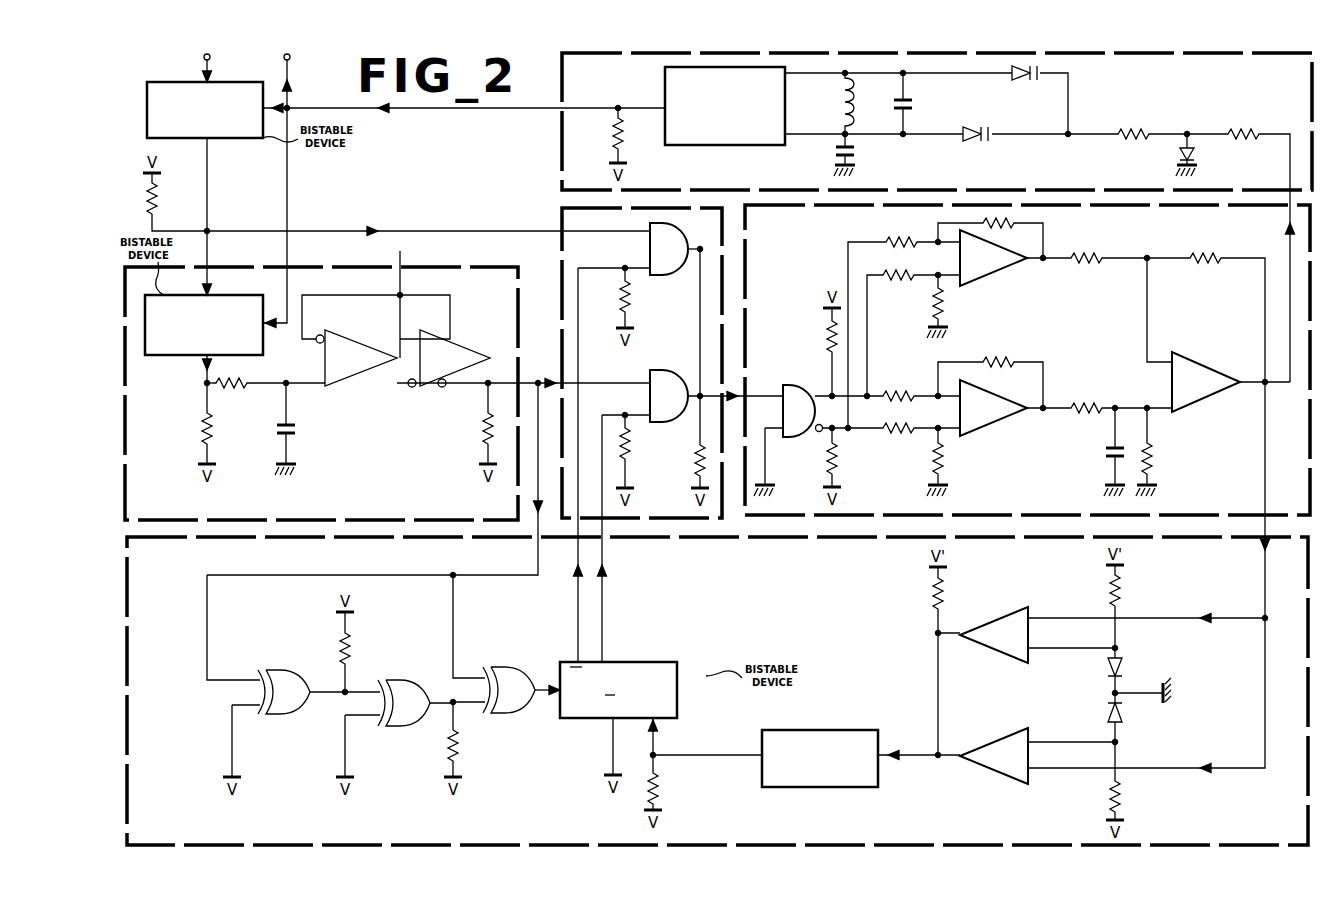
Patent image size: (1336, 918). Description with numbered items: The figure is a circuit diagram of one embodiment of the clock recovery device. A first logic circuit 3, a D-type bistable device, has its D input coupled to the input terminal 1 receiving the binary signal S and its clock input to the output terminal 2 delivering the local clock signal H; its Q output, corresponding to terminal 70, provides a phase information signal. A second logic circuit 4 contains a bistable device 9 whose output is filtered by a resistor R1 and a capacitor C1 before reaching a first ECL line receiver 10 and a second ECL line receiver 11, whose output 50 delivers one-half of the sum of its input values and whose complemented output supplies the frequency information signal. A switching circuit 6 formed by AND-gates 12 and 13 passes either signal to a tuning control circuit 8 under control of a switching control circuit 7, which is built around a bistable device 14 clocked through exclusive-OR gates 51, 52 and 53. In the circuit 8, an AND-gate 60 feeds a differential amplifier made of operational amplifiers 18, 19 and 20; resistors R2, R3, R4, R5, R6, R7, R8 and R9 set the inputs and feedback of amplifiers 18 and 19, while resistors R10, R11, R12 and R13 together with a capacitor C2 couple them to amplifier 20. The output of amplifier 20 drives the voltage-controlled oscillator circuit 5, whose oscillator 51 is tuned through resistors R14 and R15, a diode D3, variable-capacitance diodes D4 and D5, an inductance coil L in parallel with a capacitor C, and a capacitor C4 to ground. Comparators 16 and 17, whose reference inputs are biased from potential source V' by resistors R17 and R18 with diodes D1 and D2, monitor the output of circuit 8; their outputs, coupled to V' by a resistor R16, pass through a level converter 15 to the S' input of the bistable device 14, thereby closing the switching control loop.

The input terminal 1 is at (210, 61).
The output terminal 2 is at (290, 64).
The first logic circuit 3 is at (158, 76).
The second logic circuit 4 is at (413, 265).
The oscillator circuit 5 is at (562, 150).
The switching circuit 6 is at (562, 210).
The switching control circuit 7 is at (1306, 823).
The tuning control circuit 8 is at (1313, 244).
The bistable device 9 is at (168, 357).
The first ECL line receiver 10 is at (337, 334).
The second ECL line receiver 11 is at (443, 390).
The AND-gate 12 is at (660, 275).
The AND-gate 13 is at (650, 365).
The bistable device 14 is at (642, 662).
The level converter 15 is at (784, 728).
The comparator 16 is at (992, 620).
The comparator 17 is at (992, 735).
The operational amplifier 18 is at (1002, 274).
The operational amplifier 19 is at (1002, 421).
The operational amplifier 20 is at (1202, 363).
The output of line receiver 50 is at (460, 334).
The oscillator 51 is at (698, 148).
The exclusive-OR gate 52 is at (390, 682).
The exclusive-OR gate 53 is at (488, 662).
The AND-gate 60 is at (782, 382).
The terminal 70 is at (212, 148).
The resistor R1 is at (239, 380).
The resistor R2 is at (914, 384).
The resistor R3 is at (1002, 361).
The resistor R4 is at (910, 430).
The resistor R5 is at (948, 452).
The resistor R6 is at (910, 282).
The resistor R7 is at (879, 237).
The resistor R8 is at (1009, 222).
The resistor R9 is at (948, 296).
The resistor R10 is at (1093, 266).
The resistor R11 is at (1106, 396).
The resistor R12 is at (1204, 258).
The resistor R13 is at (1158, 468).
The resistor R14 is at (1242, 128).
The resistor R15 is at (1122, 128).
The resistor R16 is at (929, 606).
The resistor R17 is at (1130, 608).
The resistor R18 is at (1132, 812).
The capacitor C is at (912, 108).
The capacitor C1 is at (298, 436).
The capacitor C2 is at (1102, 466).
The capacitor C4 is at (832, 157).
The inductance coil L is at (832, 102).
The diode D1 is at (1126, 663).
The diode D2 is at (1122, 723).
The diode D3 is at (1194, 150).
The variable-capacitance diode D4 is at (1046, 70).
The variable-capacitance diode D5 is at (992, 140).